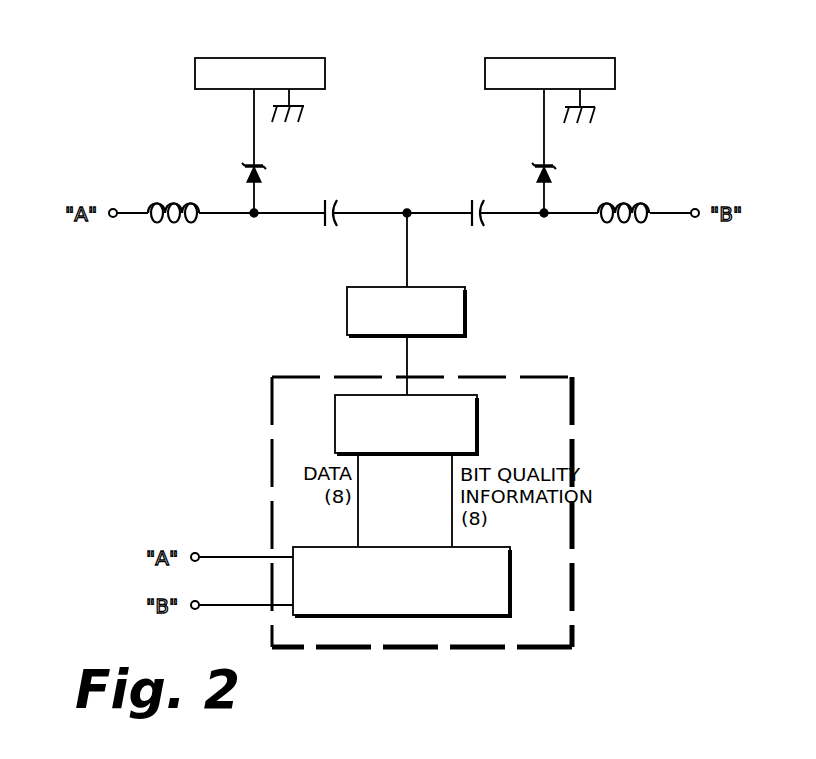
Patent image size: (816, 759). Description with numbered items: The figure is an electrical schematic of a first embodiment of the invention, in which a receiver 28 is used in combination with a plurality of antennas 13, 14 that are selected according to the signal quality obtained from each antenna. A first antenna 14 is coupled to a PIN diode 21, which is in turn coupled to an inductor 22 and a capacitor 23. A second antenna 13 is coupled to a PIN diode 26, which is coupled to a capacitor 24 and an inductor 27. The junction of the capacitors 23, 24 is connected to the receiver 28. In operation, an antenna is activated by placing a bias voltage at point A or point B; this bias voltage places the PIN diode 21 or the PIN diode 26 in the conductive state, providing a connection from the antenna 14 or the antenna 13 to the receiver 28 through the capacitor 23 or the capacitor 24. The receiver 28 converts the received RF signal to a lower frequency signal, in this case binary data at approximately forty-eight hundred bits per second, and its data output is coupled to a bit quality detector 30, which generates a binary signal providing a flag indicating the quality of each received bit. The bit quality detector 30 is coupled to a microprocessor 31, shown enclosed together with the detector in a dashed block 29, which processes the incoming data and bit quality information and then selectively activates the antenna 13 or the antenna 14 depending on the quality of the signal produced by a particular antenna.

The second antenna 13 is at (590, 58).
The first antenna 14 is at (300, 58).
The PIN diode 21 is at (262, 174).
The inductor 22 is at (173, 200).
The capacitor 23 is at (323, 226).
The capacitor 24 is at (470, 226).
The PIN diode 26 is at (552, 174).
The inductor 27 is at (630, 200).
The receiver 28 is at (445, 287).
The decoder unit 29 is at (552, 377).
The bit quality detector 30 is at (478, 424).
The microprocessor 31 is at (512, 575).